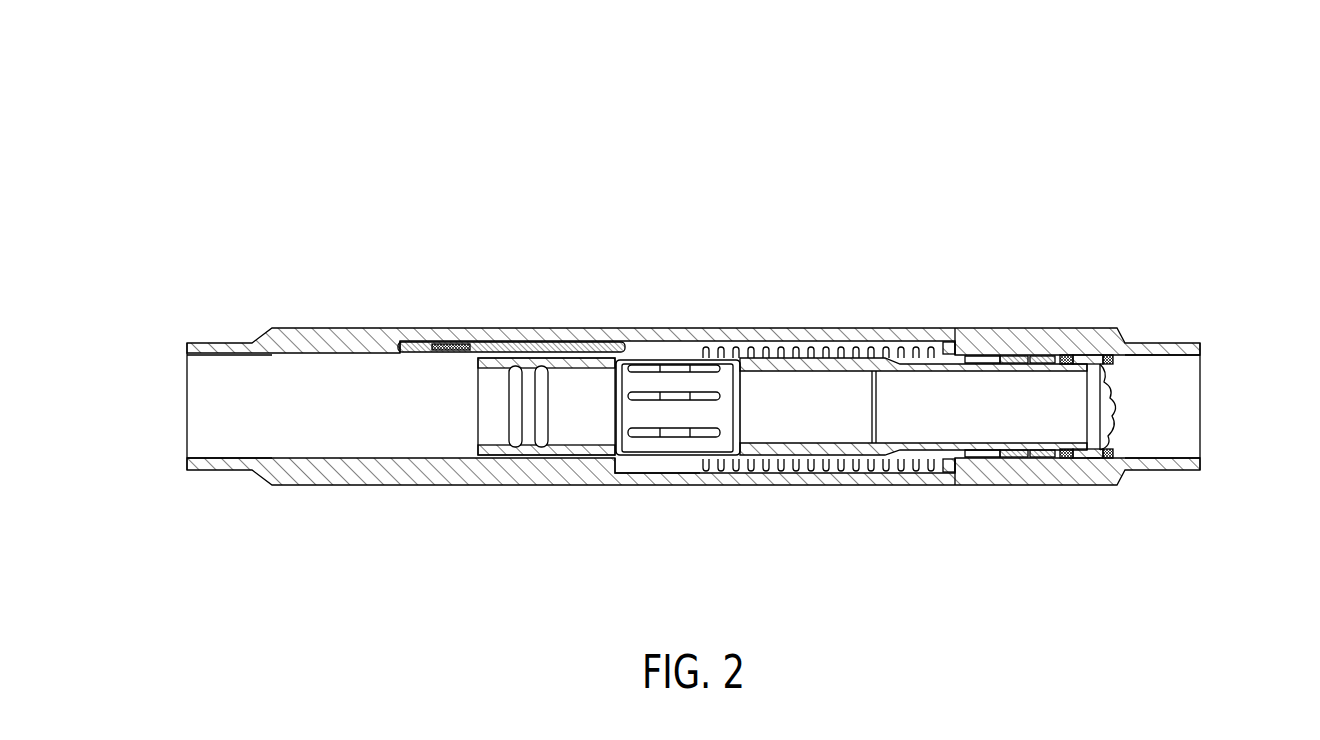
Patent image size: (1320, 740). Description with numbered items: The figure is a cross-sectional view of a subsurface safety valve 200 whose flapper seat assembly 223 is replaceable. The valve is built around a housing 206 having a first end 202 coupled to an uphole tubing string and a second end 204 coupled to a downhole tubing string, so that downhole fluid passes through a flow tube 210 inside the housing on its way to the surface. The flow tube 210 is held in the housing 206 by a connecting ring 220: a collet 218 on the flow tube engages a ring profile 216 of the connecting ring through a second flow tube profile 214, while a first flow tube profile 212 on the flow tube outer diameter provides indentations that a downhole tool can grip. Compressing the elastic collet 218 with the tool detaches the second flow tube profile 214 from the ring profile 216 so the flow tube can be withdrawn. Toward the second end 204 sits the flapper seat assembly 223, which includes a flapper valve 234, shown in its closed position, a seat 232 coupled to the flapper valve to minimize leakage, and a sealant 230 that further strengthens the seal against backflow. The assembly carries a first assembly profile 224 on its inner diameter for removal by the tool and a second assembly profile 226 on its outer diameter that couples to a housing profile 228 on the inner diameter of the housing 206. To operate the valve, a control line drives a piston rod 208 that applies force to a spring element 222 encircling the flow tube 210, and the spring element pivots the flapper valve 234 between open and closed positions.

The safety valve 200 is at (309, 109).
The first end 202 is at (220, 382).
The second end 204 is at (1185, 432).
The housing 206 is at (862, 337).
The piston rod 208 is at (517, 347).
The flow tube 210 is at (557, 387).
The first flow tube profile 212 is at (528, 437).
The second flow tube profile 214 is at (675, 352).
The ring profile 216 is at (700, 348).
The collet 218 is at (632, 385).
The connecting ring 220 is at (677, 463).
The spring element 222 is at (790, 350).
The flapper seat assembly 223 is at (1093, 459).
The first assembly profile 224 is at (1010, 355).
The second assembly profile 226 is at (1022, 357).
The housing profile 228 is at (1033, 357).
The sealant 230 is at (1068, 357).
The seat 232 is at (1118, 357).
The flapper valve 234 is at (1117, 397).